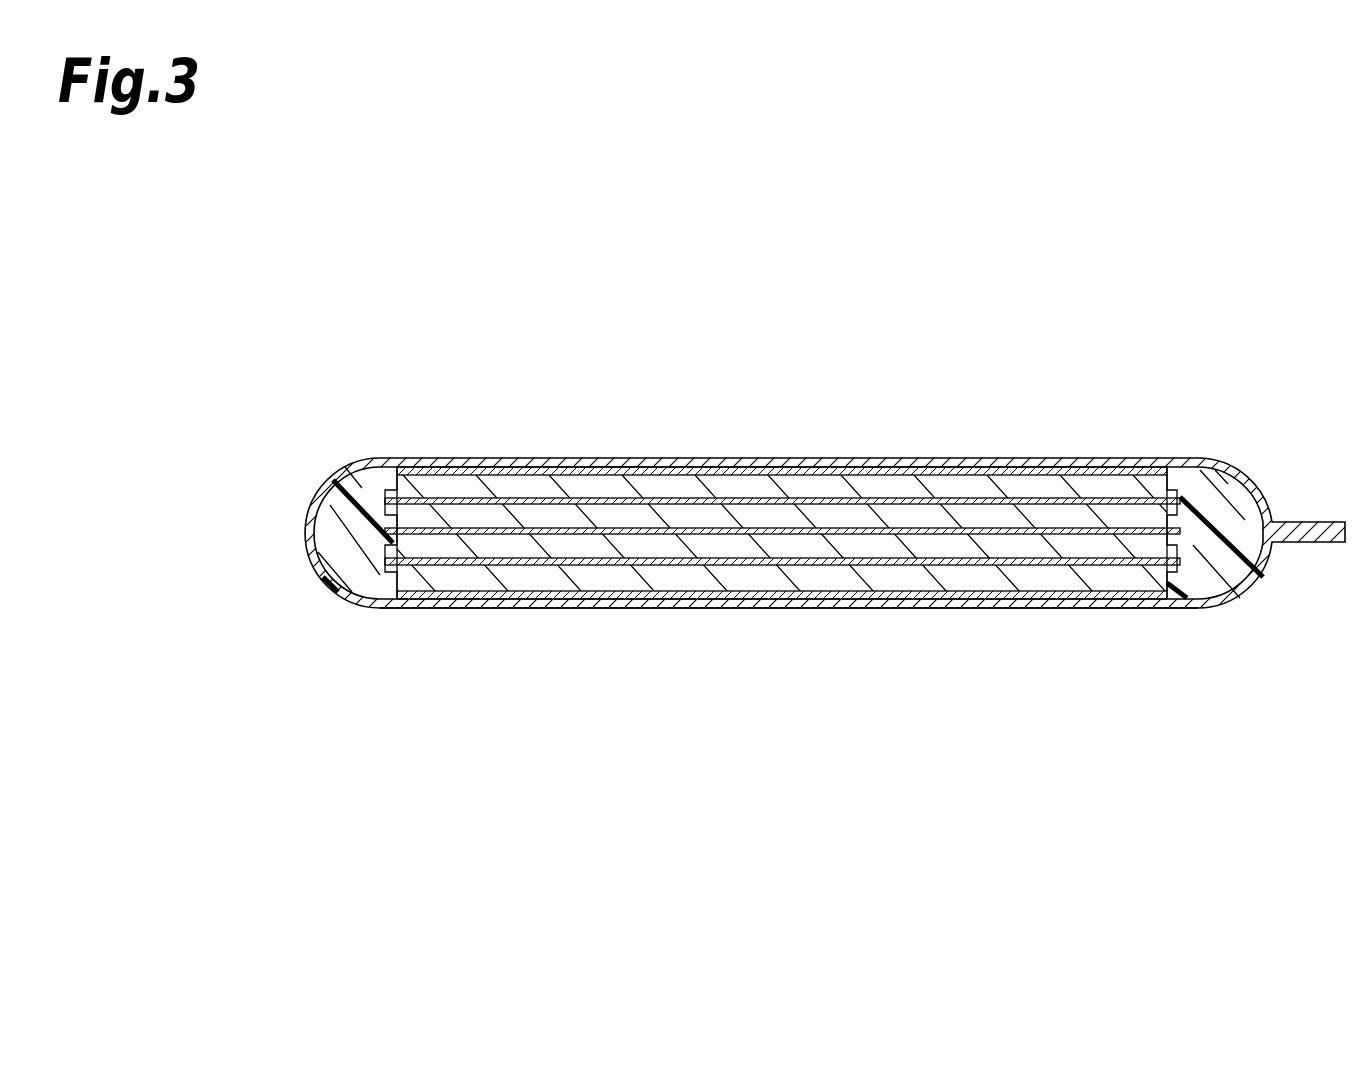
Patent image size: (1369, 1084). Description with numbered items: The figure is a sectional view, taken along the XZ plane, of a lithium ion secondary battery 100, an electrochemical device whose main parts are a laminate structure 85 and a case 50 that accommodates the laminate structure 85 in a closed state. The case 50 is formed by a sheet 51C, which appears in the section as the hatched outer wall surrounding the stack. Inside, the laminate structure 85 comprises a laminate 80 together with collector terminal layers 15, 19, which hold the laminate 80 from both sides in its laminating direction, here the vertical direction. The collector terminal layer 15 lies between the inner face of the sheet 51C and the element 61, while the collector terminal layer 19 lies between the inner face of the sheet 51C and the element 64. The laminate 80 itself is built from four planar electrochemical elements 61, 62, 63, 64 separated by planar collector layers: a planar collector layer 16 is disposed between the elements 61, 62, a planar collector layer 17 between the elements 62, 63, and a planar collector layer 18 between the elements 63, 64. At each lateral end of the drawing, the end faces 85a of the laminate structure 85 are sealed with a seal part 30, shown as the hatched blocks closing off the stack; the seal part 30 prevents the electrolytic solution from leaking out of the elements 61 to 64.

The lithium ion secondary battery 100 is at (801, 562).
The seal part 30 is at (327, 512).
The end faces of the laminate structure 85a is at (385, 497).
The case 50 is at (882, 460).
The sheet 51C is at (1107, 608).
The collector terminal layer 15 is at (507, 474).
The planar element 61 is at (445, 487).
The planar collector layer 16 is at (478, 502).
The planar element 62 is at (445, 517).
The planar collector layer 17 is at (468, 532).
The planar element 63 is at (445, 547).
The planar collector layer 18 is at (460, 562).
The planar element 64 is at (445, 578).
The collector terminal layer 19 is at (455, 596).
The laminate 80 is at (784, 698).
The laminate structure 85 is at (784, 659).